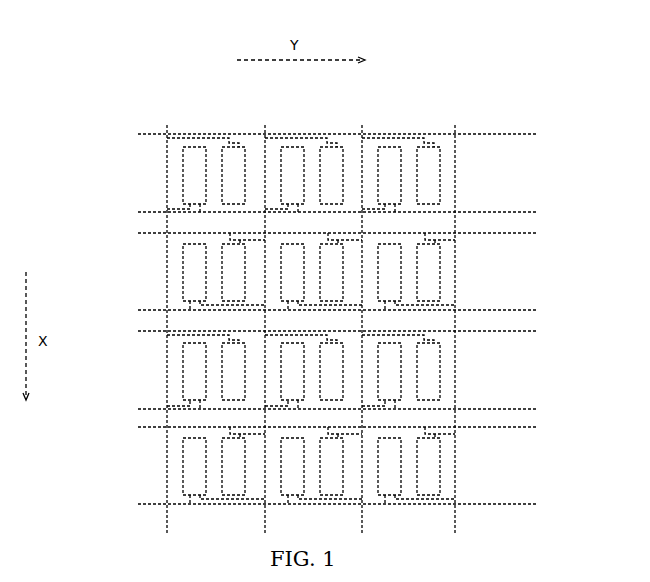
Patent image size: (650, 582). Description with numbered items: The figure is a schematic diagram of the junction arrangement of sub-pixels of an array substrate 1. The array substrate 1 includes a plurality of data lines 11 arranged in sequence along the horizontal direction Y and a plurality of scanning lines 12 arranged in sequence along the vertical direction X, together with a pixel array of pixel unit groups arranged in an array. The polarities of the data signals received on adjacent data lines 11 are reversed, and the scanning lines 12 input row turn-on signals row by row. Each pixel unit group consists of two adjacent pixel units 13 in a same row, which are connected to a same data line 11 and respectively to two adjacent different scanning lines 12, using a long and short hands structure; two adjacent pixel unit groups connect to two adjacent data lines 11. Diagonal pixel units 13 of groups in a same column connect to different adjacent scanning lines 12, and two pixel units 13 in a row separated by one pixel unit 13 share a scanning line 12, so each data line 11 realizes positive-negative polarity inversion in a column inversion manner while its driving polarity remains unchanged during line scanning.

The array substrate 1 is at (481, 40).
The data line 11 is at (455, 185).
The scanning line 12 is at (500, 131).
The pixel unit 13 is at (433, 262).